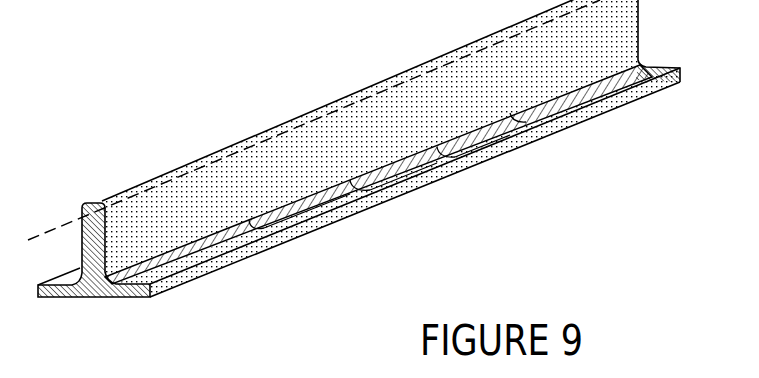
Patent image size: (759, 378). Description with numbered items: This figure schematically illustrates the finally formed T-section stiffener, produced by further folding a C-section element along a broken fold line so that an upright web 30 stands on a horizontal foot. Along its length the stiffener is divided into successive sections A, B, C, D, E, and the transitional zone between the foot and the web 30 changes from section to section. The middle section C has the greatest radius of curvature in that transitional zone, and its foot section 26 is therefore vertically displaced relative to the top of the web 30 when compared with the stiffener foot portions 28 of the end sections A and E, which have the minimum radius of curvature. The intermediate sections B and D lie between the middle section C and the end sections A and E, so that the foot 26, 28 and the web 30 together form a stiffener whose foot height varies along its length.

The foot section 26 is at (414, 190).
The stiffener foot portions 28 is at (135, 297).
The web 30 is at (628, 38).
The end section A is at (186, 283).
The section B is at (325, 238).
The middle section C is at (448, 190).
The section D is at (525, 152).
The end section E is at (618, 108).